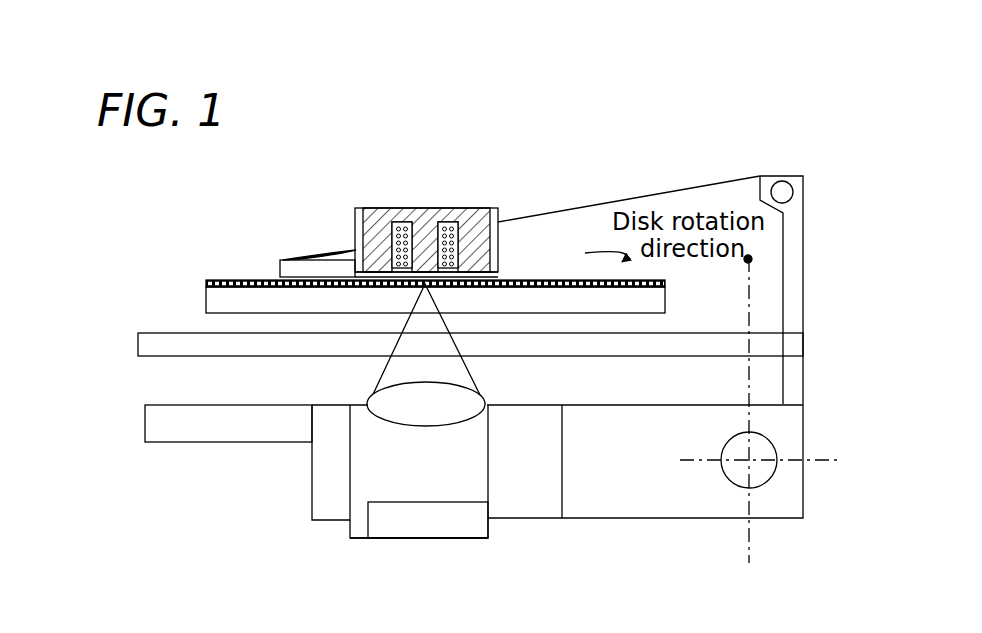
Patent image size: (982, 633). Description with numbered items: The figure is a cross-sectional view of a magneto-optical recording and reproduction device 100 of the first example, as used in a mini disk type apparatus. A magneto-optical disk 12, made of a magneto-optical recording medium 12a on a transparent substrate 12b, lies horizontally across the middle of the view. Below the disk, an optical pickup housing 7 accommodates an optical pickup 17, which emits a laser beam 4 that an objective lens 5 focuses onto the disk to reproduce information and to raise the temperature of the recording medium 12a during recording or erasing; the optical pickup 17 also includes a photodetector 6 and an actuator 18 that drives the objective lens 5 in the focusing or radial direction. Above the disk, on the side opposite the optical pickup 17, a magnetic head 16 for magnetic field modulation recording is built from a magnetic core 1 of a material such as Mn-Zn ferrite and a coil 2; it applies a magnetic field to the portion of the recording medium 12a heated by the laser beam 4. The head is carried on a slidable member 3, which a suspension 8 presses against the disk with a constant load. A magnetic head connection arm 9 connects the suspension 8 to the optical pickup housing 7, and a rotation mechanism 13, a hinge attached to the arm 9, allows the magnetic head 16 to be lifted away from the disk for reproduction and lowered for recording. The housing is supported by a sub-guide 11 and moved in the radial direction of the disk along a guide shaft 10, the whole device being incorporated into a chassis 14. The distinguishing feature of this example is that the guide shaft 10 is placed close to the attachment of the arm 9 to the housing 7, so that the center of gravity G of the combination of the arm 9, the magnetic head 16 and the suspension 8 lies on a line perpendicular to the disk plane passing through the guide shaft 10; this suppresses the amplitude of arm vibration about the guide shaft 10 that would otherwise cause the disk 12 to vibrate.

The magneto-optical recording and reproduction device 100 is at (524, 42).
The magnetic core 1 is at (427, 230).
The coil 2 is at (376, 210).
The magnetic head 16 is at (423, 128).
The slidable member 3 is at (270, 262).
The magneto-optical disk 12 is at (346, 288).
The magneto-optical recording medium 12a is at (205, 283).
The transparent substrate 12b is at (205, 300).
The chassis 14 is at (152, 350).
The sub-guide 11 is at (158, 430).
The laser beam 4 is at (412, 368).
The objective lens 5 is at (440, 396).
The optical pickup housing 7 is at (322, 494).
The optical pickup 17 is at (347, 502).
The photodetector 6 is at (460, 530).
The actuator 18 is at (538, 498).
The magnetic head connection arm 9 is at (797, 316).
The suspension 8 is at (592, 205).
The rotation mechanism 13 is at (790, 180).
The guide shaft 10 is at (770, 440).
The center of gravity G is at (748, 258).